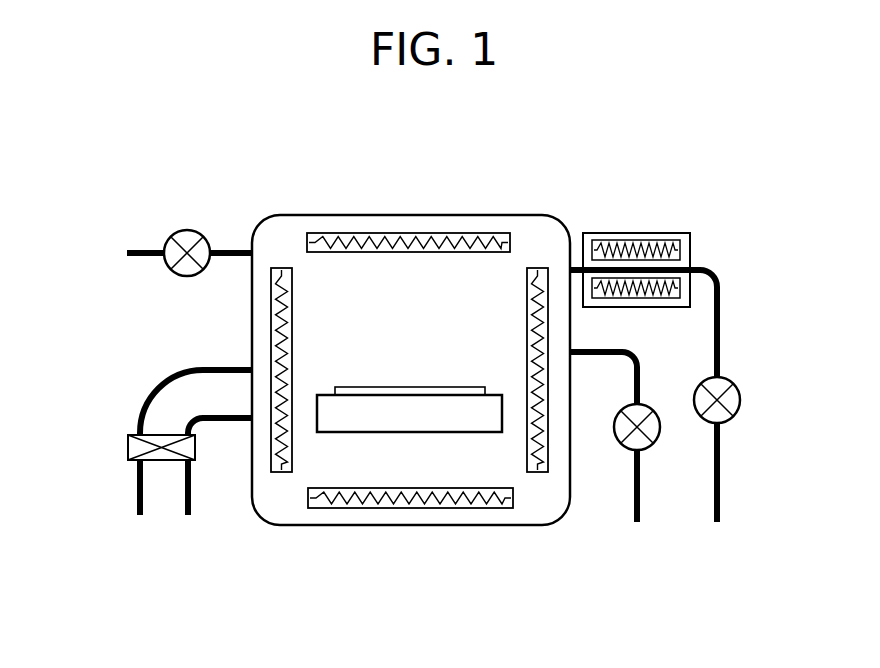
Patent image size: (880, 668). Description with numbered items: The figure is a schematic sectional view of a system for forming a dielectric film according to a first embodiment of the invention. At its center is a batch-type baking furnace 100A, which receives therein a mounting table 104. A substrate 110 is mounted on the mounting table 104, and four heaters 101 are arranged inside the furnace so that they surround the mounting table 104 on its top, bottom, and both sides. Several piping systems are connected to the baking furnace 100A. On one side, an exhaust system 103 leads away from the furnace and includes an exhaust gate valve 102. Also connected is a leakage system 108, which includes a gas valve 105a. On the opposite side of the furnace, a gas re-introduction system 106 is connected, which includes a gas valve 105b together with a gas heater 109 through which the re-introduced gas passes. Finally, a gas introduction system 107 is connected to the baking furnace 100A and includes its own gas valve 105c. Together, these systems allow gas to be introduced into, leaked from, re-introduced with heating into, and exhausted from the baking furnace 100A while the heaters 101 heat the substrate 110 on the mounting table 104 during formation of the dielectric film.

The batch-type baking furnace 100A is at (405, 213).
The heaters 101 is at (413, 500).
The exhaust gate valve 102 is at (125, 447).
The exhaust system 103 is at (162, 495).
The mounting table 104 is at (448, 413).
The gas valve 105a is at (197, 230).
The gas valve 105b is at (740, 407).
The gas valve 105c is at (630, 452).
The gas re-introduction system 106 is at (717, 523).
The gas introduction system 107 is at (638, 523).
The leakage system 108 is at (147, 257).
The gas heater 109 is at (632, 233).
The substrate 110 is at (393, 395).